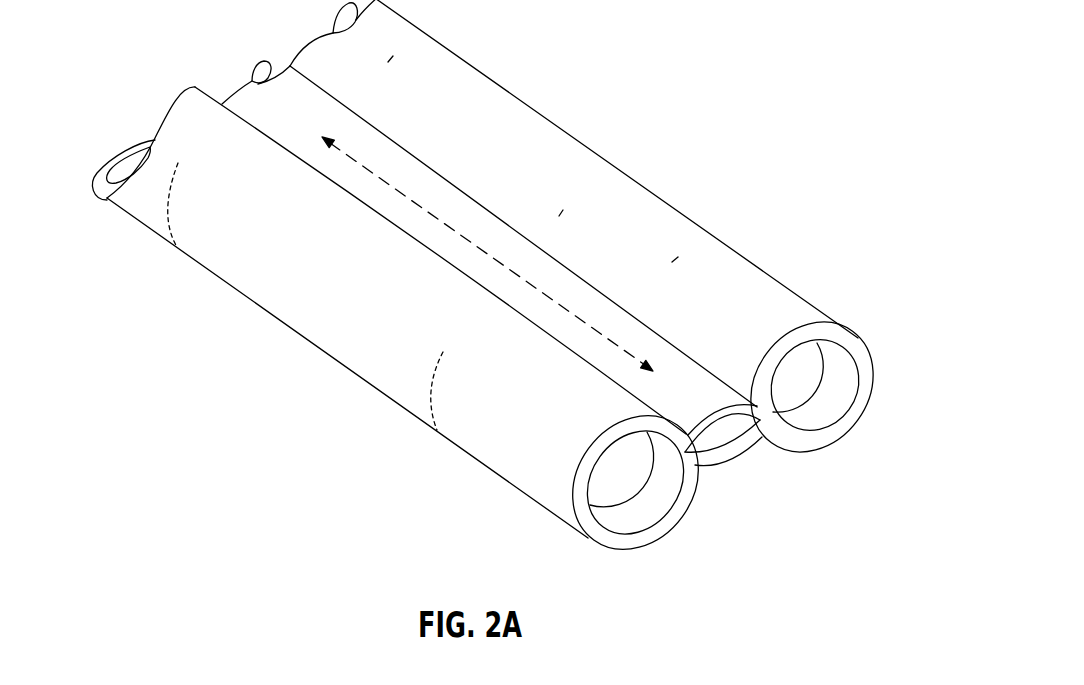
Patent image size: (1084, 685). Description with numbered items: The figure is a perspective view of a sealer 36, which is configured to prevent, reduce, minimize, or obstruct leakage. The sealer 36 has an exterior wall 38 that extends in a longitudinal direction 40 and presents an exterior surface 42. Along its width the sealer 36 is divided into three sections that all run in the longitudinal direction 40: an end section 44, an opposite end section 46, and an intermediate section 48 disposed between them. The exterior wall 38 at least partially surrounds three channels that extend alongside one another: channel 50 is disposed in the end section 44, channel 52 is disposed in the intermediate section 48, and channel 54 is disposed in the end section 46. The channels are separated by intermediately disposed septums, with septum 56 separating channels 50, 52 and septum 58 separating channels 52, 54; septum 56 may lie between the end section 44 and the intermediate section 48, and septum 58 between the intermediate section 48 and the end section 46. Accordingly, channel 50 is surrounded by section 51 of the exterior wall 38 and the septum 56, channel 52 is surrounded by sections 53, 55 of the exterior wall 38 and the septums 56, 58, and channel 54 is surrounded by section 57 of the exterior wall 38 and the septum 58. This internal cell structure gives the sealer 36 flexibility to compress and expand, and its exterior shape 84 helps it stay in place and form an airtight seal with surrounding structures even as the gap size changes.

The sealer 36 is at (631, 127).
The exterior wall 38 is at (150, 140).
The longitudinal direction 40 is at (408, 196).
The exterior surface 42 is at (418, 392).
The end section 44 is at (252, 273).
The end section 46 is at (813, 320).
The intermediate section 48 is at (705, 397).
The channel 50 is at (650, 515).
The section of the exterior wall 51 is at (545, 480).
The channel 52 is at (742, 440).
The section of the exterior wall 53 is at (672, 377).
The channel 54 is at (839, 401).
The section of the exterior wall 55 is at (738, 445).
The septum 56 is at (697, 467).
The section of the exterior wall 57 is at (867, 347).
The septum 58 is at (753, 398).
The exterior shape 84 is at (623, 549).